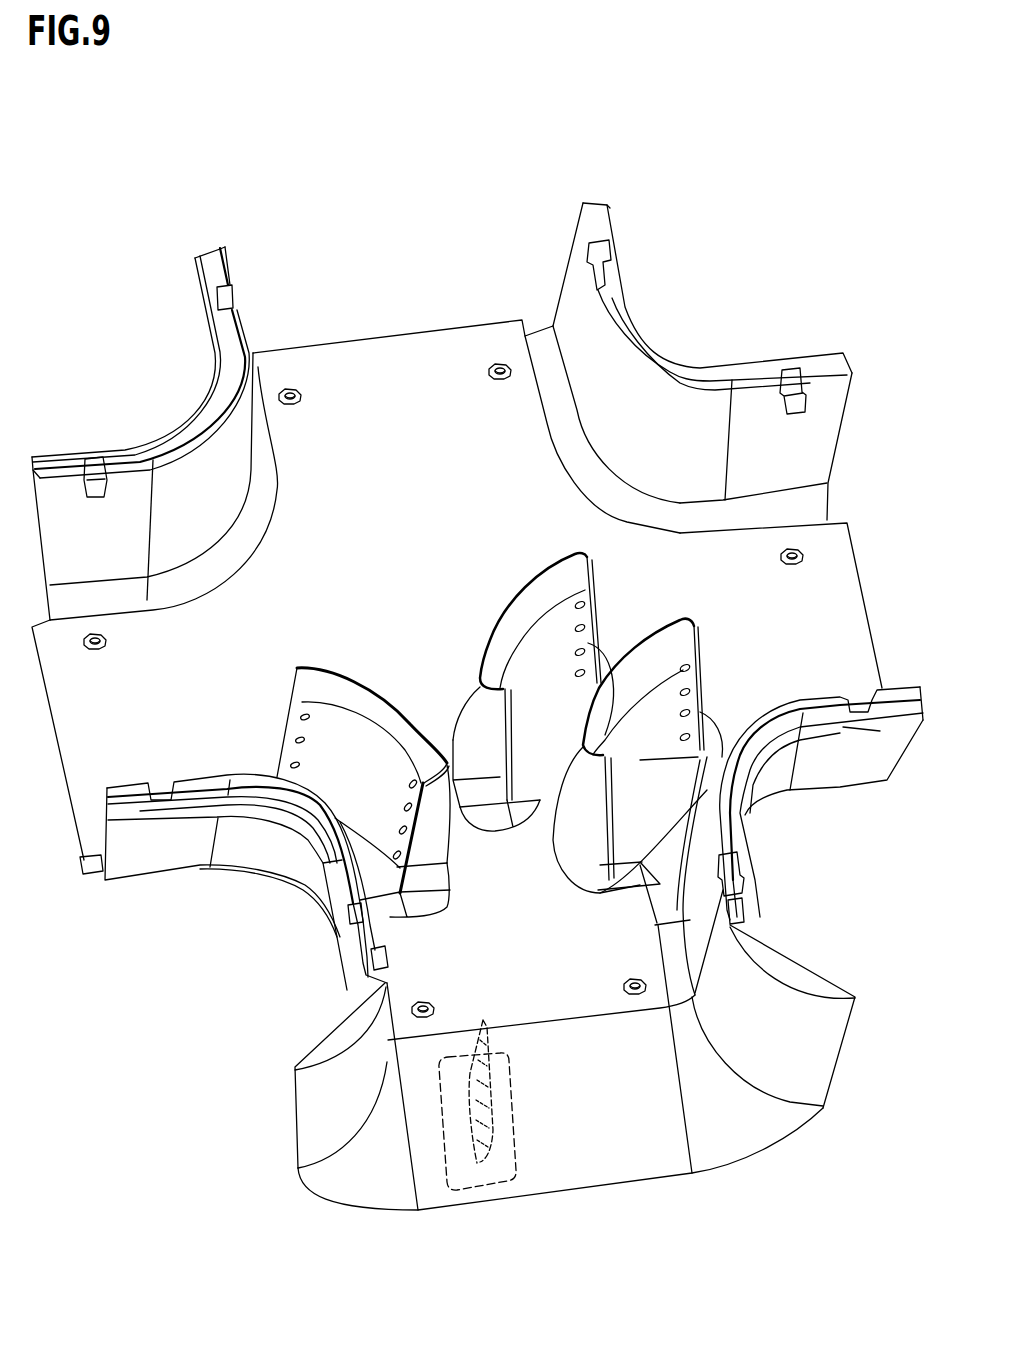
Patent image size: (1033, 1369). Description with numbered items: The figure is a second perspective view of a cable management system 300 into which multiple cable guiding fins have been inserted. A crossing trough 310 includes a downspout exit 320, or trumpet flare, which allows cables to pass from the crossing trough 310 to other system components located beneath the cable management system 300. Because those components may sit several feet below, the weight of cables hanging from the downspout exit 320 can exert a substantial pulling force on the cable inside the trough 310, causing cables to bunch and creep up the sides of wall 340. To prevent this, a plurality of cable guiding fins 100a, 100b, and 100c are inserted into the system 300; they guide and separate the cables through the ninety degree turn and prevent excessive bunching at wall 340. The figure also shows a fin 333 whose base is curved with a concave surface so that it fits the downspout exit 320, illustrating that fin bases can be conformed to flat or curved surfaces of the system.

The cable management system 300 is at (800, 268).
The crossing trough 310 is at (643, 363).
The downspout exit 320 is at (622, 1141).
The fin 333 is at (461, 1191).
The wall 340 is at (700, 837).
The cable guiding fin 100a is at (360, 740).
The cable guiding fin 100b is at (543, 633).
The cable guiding fin 100c is at (647, 697).